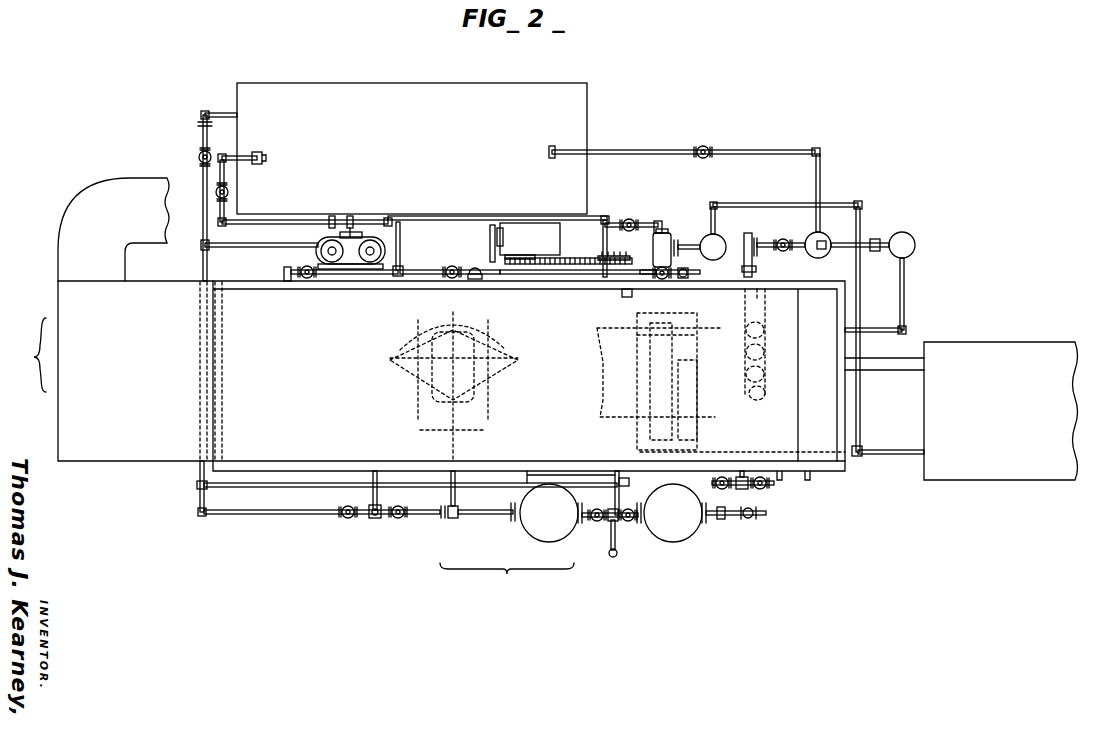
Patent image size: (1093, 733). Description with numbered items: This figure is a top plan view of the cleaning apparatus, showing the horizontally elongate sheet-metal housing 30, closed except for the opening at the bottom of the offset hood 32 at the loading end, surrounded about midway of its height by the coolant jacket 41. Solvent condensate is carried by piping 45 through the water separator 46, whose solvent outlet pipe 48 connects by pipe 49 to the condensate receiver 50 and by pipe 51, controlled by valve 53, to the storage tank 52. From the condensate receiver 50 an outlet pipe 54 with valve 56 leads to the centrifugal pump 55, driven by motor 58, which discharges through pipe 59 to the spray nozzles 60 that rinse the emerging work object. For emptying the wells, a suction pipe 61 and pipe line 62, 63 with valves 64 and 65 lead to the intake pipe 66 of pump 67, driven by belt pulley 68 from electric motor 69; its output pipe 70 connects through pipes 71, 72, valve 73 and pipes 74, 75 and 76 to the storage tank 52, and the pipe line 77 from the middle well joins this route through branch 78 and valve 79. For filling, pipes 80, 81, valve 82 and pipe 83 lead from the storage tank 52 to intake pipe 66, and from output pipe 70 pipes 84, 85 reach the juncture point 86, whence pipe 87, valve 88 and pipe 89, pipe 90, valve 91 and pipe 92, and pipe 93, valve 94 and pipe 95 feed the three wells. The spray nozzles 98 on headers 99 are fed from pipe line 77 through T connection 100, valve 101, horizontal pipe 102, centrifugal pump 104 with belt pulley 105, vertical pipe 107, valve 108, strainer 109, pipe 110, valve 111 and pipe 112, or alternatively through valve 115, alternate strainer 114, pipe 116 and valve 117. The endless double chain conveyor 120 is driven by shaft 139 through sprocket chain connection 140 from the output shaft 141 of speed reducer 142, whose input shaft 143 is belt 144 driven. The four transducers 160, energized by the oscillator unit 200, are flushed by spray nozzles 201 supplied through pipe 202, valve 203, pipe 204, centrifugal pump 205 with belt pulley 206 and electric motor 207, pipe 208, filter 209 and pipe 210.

The housing 30 is at (507, 579).
The offset hood 32 is at (426, 319).
The jacket 41 is at (243, 468).
The piping 45 is at (900, 300).
The water separator 46 is at (910, 240).
The solvent outlet pipe 48 is at (876, 239).
The pipe 49 is at (822, 252).
The condensate receiver 50 is at (826, 240).
The pipe 51 is at (815, 173).
The storage tank 52 is at (412, 148).
The valve 53 is at (704, 146).
The outlet pipe 54 is at (784, 239).
The centrifugal pump 55 is at (746, 234).
The valve 56 is at (784, 251).
The motor 58 is at (756, 240).
The pipe 59 is at (756, 268).
The spray nozzles 60 is at (748, 356).
The suction pipe 61 is at (730, 484).
The pipe line 62 is at (320, 487).
The pipe line 63 is at (199, 380).
The valve 64 is at (764, 488).
The valve 65 is at (745, 486).
The intake pipe 66 is at (246, 246).
The pump 67 is at (320, 246).
The belt pulley 68 is at (352, 216).
The electric motor 69 is at (390, 218).
The output pipe 70 is at (332, 216).
The pipe 71 is at (296, 220).
The pipe 72 is at (228, 218).
The valve 73 is at (230, 194).
The pipe 74 is at (226, 185).
The pipe 75 is at (228, 156).
The pipe 76 is at (262, 157).
The pipe line 77 is at (373, 480).
The branch 78 is at (260, 516).
The valve 79 is at (347, 519).
The pipe 80 is at (232, 115).
The pipe 81 is at (203, 128).
The valve 82 is at (198, 157).
The pipe 83 is at (203, 206).
The pipe 84 is at (432, 216).
The pipe 85 is at (400, 244).
The juncture point 86 is at (400, 268).
The pipe 87 is at (343, 275).
The valve 88 is at (308, 279).
The pipe 89 is at (287, 280).
The pipe 90 is at (420, 275).
The valve 91 is at (453, 266).
The pipe 92 is at (476, 280).
The pipe 93 is at (572, 275).
The valve 94 is at (650, 278).
The pipe 95 is at (686, 280).
The spray nozzles 98 is at (392, 360).
The spray headers 99 is at (453, 381).
The T connection 100 is at (375, 519).
The valve 101 is at (400, 505).
The horizontal pipe 102 is at (450, 508).
The centrifugal pump 104 is at (630, 482).
The belt pulley 105 is at (577, 482).
The vertical pipe 107 is at (613, 558).
The valve 108 is at (595, 522).
The strainer 109 is at (551, 513).
The pipe 110 is at (490, 516).
The valve 111 is at (443, 519).
The pipe 112 is at (458, 500).
The alternate strainer 114 is at (705, 513).
The valve 115 is at (633, 522).
The pipe 116 is at (721, 520).
The valve 117 is at (748, 519).
The endless double chain conveyor 120 is at (598, 375).
The shaft 139 is at (627, 297).
The sprocket chain connection 140 is at (578, 258).
The output shaft 141 is at (520, 247).
The speed reducer 142 is at (548, 223).
The input shaft 143 is at (502, 228).
The belt 144 is at (492, 224).
The transducers 160 is at (645, 318).
The oscillator unit 200 is at (961, 411).
The spray nozzles 201 is at (690, 340).
The pipe 202 is at (607, 242).
The valve 203 is at (629, 219).
The pipe 204 is at (656, 221).
The centrifugal pump 205 is at (671, 236).
The belt pulley 206 is at (679, 246).
The electric motor 207 is at (622, 261).
The pipe 208 is at (670, 273).
The filter 209 is at (714, 260).
The pipe 210 is at (768, 203).